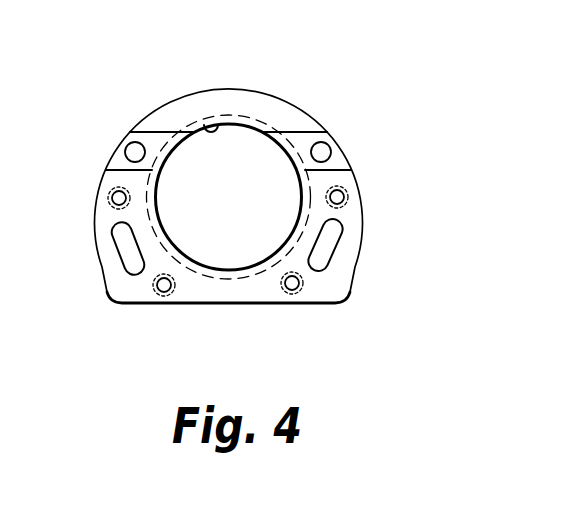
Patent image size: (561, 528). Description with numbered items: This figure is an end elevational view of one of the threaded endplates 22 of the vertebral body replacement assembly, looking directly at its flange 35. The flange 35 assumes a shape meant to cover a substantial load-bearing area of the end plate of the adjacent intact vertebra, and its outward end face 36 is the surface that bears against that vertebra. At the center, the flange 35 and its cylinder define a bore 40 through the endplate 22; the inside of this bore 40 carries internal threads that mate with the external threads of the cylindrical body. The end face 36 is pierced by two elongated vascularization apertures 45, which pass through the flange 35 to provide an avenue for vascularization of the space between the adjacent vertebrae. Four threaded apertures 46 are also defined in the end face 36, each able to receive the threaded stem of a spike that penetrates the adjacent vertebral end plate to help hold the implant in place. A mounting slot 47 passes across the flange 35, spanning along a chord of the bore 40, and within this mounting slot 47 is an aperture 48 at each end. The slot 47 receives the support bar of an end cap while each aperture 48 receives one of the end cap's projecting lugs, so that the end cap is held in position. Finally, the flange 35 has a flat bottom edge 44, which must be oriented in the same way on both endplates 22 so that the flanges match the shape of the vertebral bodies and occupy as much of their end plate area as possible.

The endplate 22 is at (172, 88).
The flange 35 is at (255, 107).
The end face 36 is at (278, 298).
The bore 40 is at (219, 118).
The bottom edge 44 is at (141, 304).
The vascularization apertures 45 is at (126, 247).
The threaded apertures 46 is at (112, 202).
The mounting slot 47 is at (115, 160).
The aperture 48 is at (132, 144).